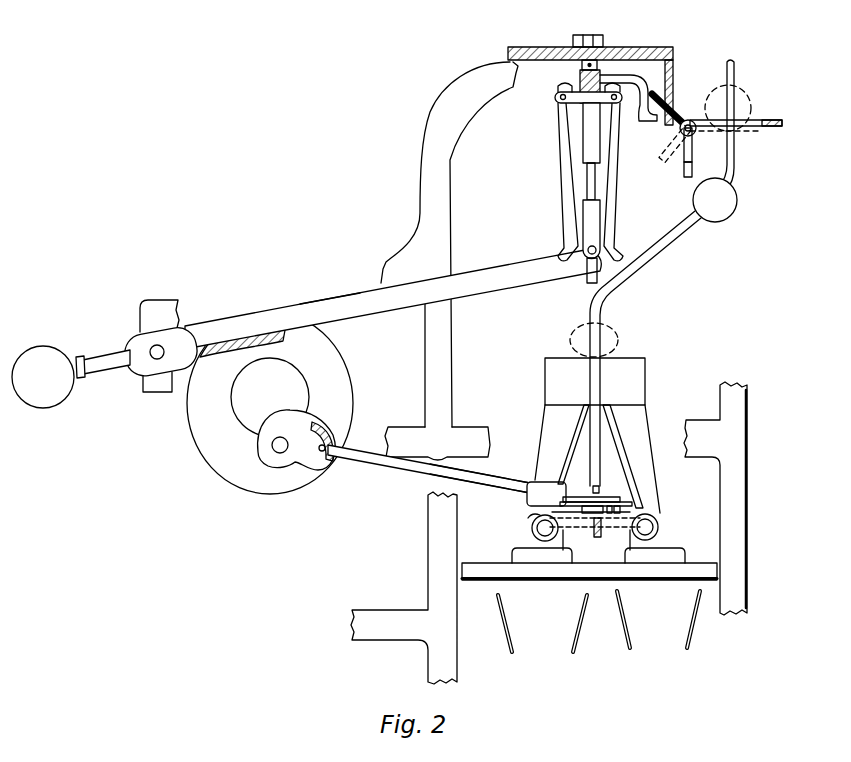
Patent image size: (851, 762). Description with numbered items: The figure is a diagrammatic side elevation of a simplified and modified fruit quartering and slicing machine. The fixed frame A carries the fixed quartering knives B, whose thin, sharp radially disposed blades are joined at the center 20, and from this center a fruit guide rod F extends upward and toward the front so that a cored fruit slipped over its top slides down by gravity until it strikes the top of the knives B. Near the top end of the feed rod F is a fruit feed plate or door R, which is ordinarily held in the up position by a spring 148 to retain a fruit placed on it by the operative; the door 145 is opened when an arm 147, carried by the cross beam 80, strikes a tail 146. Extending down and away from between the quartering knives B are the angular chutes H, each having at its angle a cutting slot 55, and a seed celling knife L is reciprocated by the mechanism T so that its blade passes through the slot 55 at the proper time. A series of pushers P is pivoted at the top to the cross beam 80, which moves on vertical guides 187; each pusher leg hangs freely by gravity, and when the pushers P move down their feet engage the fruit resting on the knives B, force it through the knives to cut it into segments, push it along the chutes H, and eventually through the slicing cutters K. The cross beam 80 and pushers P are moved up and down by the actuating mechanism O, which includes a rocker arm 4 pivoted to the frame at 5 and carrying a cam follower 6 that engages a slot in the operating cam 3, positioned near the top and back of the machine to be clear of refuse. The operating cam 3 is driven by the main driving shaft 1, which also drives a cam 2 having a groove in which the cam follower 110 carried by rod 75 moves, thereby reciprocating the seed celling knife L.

The fixed frame A is at (434, 373).
The main driving shaft 1 is at (274, 456).
The cam 2 is at (268, 438).
The operating cam 3 is at (201, 404).
The rocker arm 4 is at (499, 270).
The pivot 5 is at (152, 358).
The cam follower 6 is at (251, 326).
The actuating mechanism O is at (333, 300).
The cam follower 110 is at (330, 443).
The seed celling actuating mechanism T is at (399, 471).
The rod 75 is at (480, 483).
The cross beam 80 is at (578, 65).
The vertical guides 187 is at (609, 47).
The arm 147 is at (637, 78).
The tail 146 is at (672, 115).
The spring 148 is at (698, 118).
The fruit feed plate R is at (693, 146).
The door 145 is at (684, 178).
The fruit guide rod F is at (736, 153).
The pushers P is at (611, 197).
The center 20 is at (600, 381).
The quartering knives B is at (641, 390).
The angular chutes H is at (642, 481).
The seed celling knife L is at (641, 497).
The slicing cutters K is at (666, 548).
The cutting slot 55 is at (532, 533).